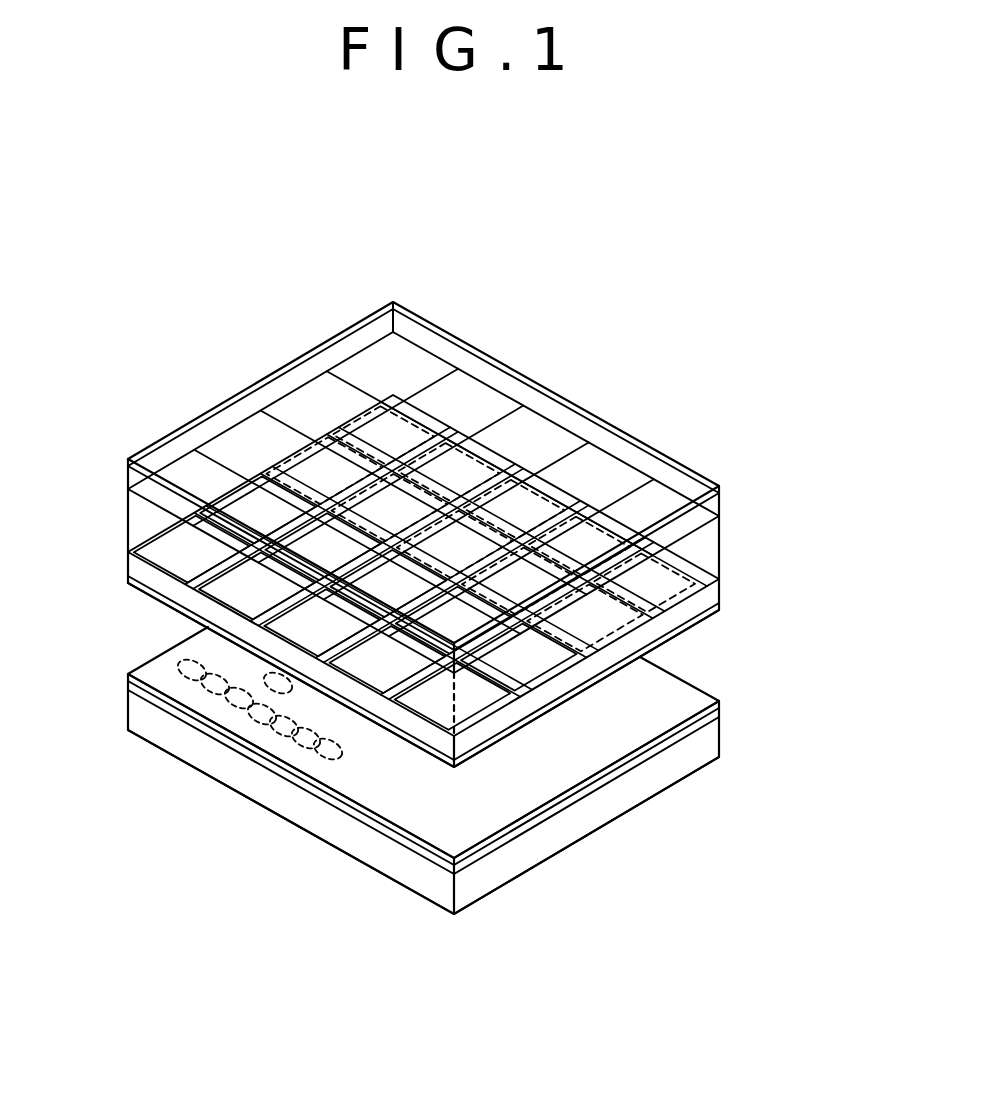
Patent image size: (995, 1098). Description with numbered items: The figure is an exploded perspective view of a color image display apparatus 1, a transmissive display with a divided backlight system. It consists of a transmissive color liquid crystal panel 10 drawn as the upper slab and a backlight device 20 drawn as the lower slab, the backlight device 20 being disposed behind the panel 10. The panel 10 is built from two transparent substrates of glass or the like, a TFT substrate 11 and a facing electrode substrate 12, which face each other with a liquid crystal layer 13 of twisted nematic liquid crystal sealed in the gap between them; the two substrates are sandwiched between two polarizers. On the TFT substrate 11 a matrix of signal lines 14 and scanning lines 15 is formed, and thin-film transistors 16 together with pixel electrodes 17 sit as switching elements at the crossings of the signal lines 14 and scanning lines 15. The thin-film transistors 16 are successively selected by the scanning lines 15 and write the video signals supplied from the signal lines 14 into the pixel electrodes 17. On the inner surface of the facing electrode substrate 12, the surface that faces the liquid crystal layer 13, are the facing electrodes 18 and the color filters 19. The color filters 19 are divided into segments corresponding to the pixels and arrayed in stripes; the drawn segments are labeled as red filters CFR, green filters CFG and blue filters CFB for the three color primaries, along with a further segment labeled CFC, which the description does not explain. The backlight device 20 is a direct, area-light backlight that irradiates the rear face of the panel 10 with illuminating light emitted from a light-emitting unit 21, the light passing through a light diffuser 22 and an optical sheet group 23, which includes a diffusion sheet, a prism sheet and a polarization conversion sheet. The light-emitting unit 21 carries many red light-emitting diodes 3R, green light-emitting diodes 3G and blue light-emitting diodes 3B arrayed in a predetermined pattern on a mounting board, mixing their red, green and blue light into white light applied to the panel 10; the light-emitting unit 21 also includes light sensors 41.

The color image display apparatus 1 is at (585, 279).
The transmissive color liquid crystal panel 10 is at (802, 497).
The TFT substrate 11 is at (712, 598).
The facing electrode substrate 12 is at (720, 508).
The liquid crystal layer 13 is at (708, 547).
The signal lines 14 is at (488, 677).
The scanning lines 15 is at (413, 680).
The thin-film transistors 16 is at (186, 526).
The pixel electrodes 17 is at (166, 553).
The facing electrodes 18 is at (290, 427).
The color filters 19 is at (468, 390).
The backlight device 20 is at (802, 672).
The light-emitting unit 21 is at (706, 745).
The light diffuser 22 is at (706, 721).
The optical sheet group 23 is at (721, 697).
The light sensors 41 is at (268, 680).
The red light-emitting diodes 3R is at (176, 677).
The green light-emitting diodes 3G is at (204, 689).
The blue light-emitting diodes 3B is at (240, 705).
The red filters CFR is at (395, 378).
The clear color filter CFC is at (457, 410).
The blue filters CFB is at (524, 447).
The green filters CFG is at (590, 484).